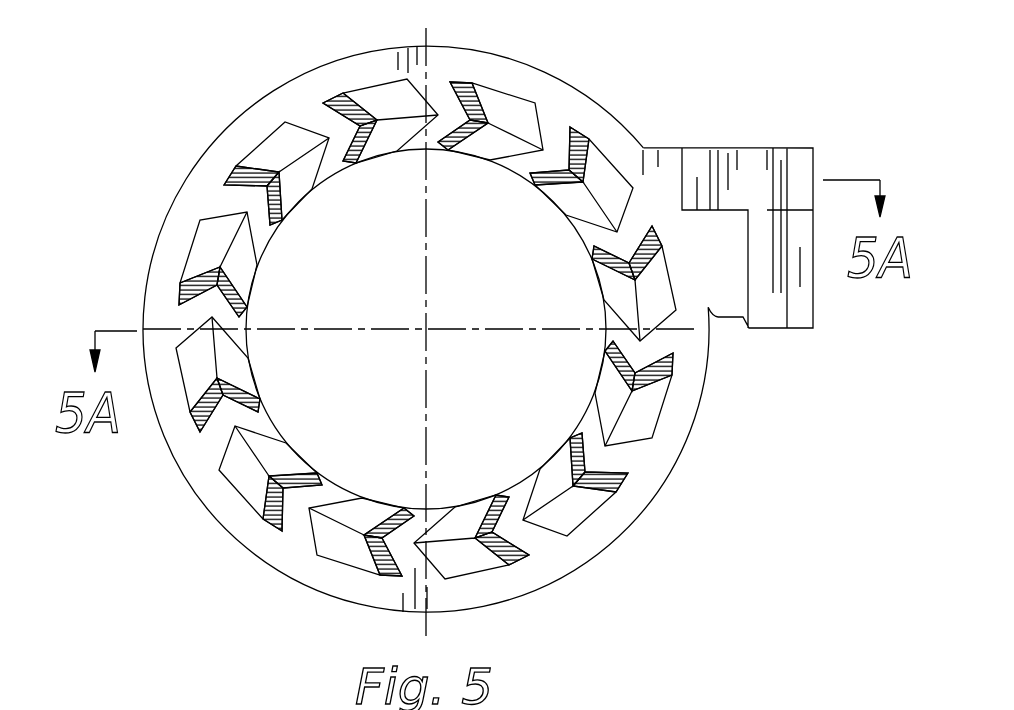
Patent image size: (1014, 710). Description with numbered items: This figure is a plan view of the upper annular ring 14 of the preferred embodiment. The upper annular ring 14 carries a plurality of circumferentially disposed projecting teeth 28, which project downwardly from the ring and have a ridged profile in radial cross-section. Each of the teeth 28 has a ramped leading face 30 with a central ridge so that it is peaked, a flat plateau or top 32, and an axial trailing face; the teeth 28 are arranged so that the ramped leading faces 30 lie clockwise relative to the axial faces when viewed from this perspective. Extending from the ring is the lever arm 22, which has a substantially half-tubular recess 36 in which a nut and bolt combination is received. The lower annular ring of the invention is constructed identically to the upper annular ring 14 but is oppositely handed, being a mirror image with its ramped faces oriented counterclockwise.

The upper annular ring 14 is at (688, 488).
The lever arm 22 is at (814, 284).
The projecting teeth 28 is at (246, 376).
The ramped leading face 30 is at (285, 133).
The flat plateau or top 32 is at (231, 178).
The half-tubular recess 36 is at (772, 300).